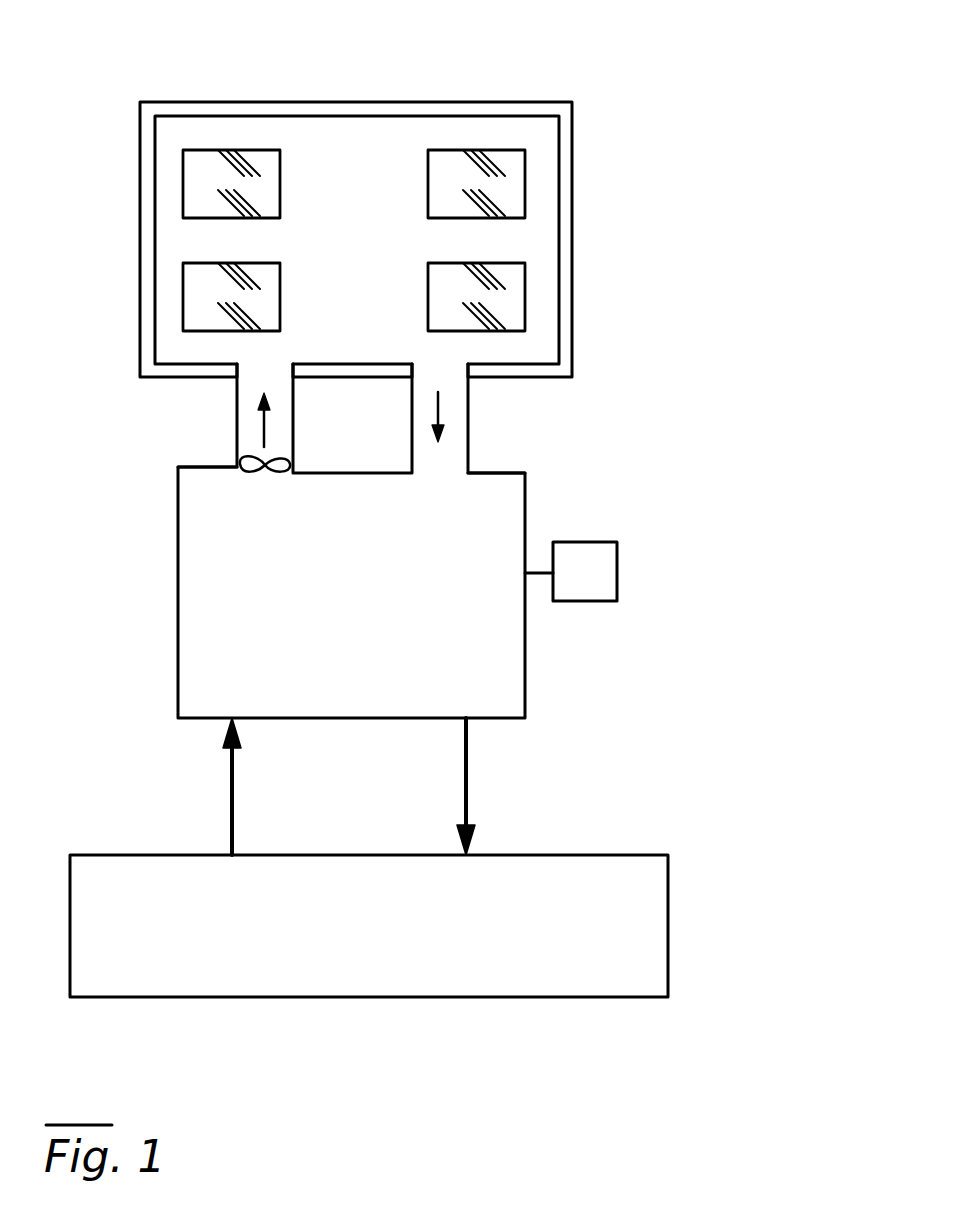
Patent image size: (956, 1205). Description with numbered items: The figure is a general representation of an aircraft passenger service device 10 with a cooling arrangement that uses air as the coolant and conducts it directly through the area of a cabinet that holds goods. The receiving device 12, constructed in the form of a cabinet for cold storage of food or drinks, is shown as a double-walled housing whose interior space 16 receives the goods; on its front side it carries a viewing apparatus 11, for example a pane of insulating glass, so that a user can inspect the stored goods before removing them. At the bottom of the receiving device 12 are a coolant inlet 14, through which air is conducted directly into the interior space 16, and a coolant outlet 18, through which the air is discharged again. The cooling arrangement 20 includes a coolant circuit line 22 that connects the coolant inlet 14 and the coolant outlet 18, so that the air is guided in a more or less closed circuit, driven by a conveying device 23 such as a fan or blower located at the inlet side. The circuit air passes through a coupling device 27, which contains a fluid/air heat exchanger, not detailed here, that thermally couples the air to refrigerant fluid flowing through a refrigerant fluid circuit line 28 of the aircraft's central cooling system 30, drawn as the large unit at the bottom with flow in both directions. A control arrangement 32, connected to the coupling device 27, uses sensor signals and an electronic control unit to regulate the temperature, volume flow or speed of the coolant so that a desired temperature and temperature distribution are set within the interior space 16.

The aircraft passenger service device 10 is at (704, 258).
The viewing apparatus 11 is at (183, 183).
The receiving device 12 is at (573, 125).
The coolant inlet 14 is at (237, 368).
The interior space 16 is at (347, 248).
The coolant outlet 18 is at (470, 368).
The cooling arrangement 20 is at (598, 529).
The coolant circuit line 22 is at (295, 440).
The conveying device 23 is at (273, 470).
The coupling device 27 is at (196, 632).
The refrigerant fluid circuit line 28 is at (238, 781).
The central cooling system 30 is at (612, 855).
The control arrangement 32 is at (590, 594).